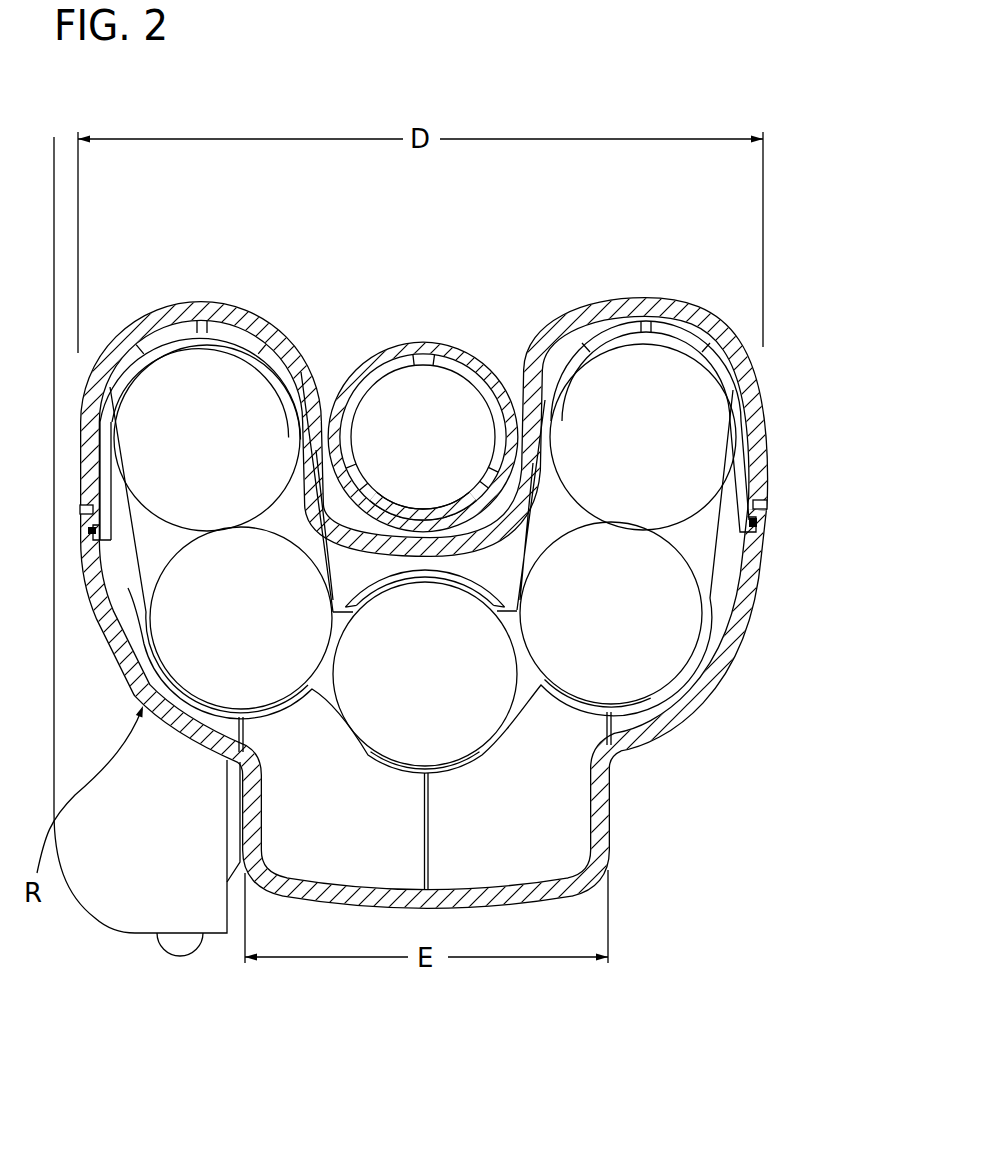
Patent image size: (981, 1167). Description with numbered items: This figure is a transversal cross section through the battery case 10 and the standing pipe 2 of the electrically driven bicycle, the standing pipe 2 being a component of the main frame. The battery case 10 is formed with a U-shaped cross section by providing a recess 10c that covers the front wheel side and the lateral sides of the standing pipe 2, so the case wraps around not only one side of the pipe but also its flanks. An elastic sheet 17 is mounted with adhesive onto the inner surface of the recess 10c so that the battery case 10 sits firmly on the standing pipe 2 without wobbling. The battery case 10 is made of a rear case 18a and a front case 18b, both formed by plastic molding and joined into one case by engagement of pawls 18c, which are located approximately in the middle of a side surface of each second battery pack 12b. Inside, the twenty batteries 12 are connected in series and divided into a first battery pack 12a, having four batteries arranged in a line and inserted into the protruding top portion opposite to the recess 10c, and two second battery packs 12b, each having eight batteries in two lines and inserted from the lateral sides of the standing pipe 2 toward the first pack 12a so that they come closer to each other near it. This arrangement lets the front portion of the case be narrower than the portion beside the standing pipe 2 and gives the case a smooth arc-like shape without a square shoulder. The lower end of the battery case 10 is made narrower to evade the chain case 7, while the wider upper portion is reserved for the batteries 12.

The standing pipe 2 is at (452, 347).
The chain case 7 is at (130, 910).
The battery case 10 is at (615, 853).
The recess 10c is at (330, 351).
The batteries 12 is at (490, 693).
The first battery pack 12a is at (499, 739).
The second battery packs 12b is at (139, 532).
The elastic sheet 17 is at (434, 537).
The rear case 18a is at (752, 363).
The front case 18b is at (762, 535).
The pawls 18c is at (760, 527).